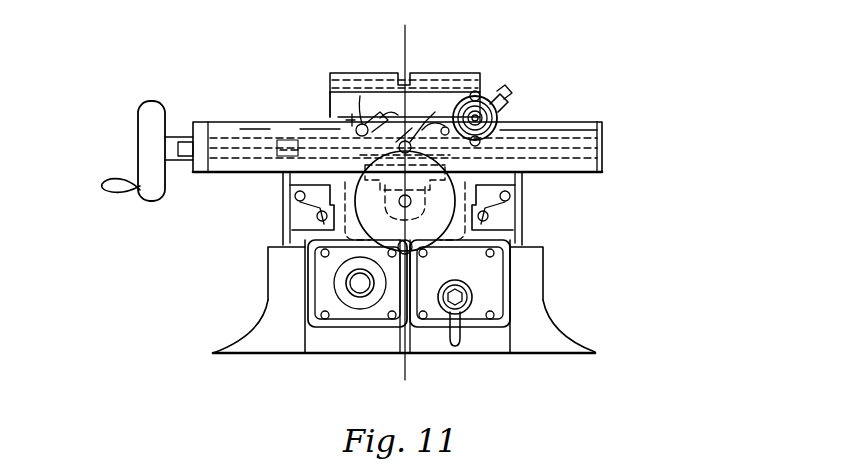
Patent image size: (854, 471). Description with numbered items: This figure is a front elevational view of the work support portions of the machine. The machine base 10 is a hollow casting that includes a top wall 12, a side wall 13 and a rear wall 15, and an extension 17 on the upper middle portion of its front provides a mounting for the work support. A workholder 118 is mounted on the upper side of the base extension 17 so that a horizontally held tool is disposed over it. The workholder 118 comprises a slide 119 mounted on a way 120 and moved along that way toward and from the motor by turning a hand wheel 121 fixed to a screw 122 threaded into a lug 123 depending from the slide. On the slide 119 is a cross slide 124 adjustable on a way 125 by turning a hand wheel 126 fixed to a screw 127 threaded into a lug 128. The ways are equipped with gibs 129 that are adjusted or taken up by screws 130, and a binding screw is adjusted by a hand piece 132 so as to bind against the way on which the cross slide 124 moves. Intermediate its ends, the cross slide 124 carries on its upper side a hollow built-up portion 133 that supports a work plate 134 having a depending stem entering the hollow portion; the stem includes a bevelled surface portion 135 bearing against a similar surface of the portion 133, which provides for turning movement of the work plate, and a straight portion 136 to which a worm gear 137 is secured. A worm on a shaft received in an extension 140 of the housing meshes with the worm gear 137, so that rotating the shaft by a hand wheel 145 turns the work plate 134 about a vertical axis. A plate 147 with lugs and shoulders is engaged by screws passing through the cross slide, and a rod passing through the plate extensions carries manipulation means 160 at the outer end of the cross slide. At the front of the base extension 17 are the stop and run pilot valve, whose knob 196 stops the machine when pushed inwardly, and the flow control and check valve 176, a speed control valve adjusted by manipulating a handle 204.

The base 10 is at (572, 333).
The top wall 12 is at (337, 117).
The side wall 13 is at (253, 118).
The rear wall 15 is at (408, 33).
The extension 17 is at (566, 357).
The workholder 118 is at (238, 250).
The slide 119 is at (493, 200).
The way 120 is at (493, 206).
The hand wheel 121 is at (403, 205).
The screw 122 is at (385, 233).
The lug 123 is at (368, 183).
The cross slide 124 is at (584, 122).
The way 125 is at (600, 143).
The hand wheel 126 is at (146, 118).
The screw 127 is at (185, 140).
The lug 128 is at (405, 202).
The gibs 129 is at (310, 212).
The screws 130 is at (600, 155).
The hand piece 132 is at (414, 128).
The hollow built-up portion 133 is at (336, 90).
The work plate 134 is at (383, 76).
The bevelled surface portion 135 is at (366, 95).
The straight portion 136 is at (440, 110).
The worm gear 137 is at (462, 112).
The extension 140 is at (498, 113).
The hand wheel 145 is at (478, 97).
The plate 147 is at (292, 182).
The manipulation means 160 is at (360, 95).
The flow control and check valve 176 is at (462, 312).
The knob 196 is at (360, 297).
The handle 204 is at (455, 346).